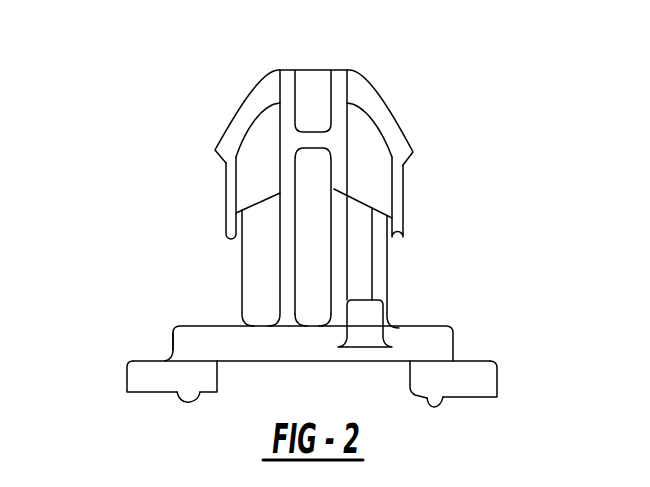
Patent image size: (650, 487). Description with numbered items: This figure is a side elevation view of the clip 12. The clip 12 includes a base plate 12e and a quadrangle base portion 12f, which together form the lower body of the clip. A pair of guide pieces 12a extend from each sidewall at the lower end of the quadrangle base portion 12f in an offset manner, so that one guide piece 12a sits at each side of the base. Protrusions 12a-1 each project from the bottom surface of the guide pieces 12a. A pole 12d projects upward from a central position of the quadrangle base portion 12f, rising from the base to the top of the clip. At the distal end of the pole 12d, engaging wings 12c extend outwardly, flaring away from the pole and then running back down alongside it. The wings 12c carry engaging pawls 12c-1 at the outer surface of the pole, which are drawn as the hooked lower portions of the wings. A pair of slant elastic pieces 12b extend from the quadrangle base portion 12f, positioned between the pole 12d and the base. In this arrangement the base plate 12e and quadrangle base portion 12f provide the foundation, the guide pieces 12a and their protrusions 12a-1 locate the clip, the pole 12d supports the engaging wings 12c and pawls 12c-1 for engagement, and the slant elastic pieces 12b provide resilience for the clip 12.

The clip 12 is at (319, 239).
The guide pieces 12a is at (319, 383).
The protrusions 12a-1 is at (325, 422).
The slant elastic pieces 12b is at (365, 354).
The engaging wings 12c is at (326, 194).
The engaging pawls 12c-1 is at (312, 198).
The pole 12d is at (242, 198).
The base plate 12e is at (347, 317).
The quadrangle base portion 12f is at (132, 328).